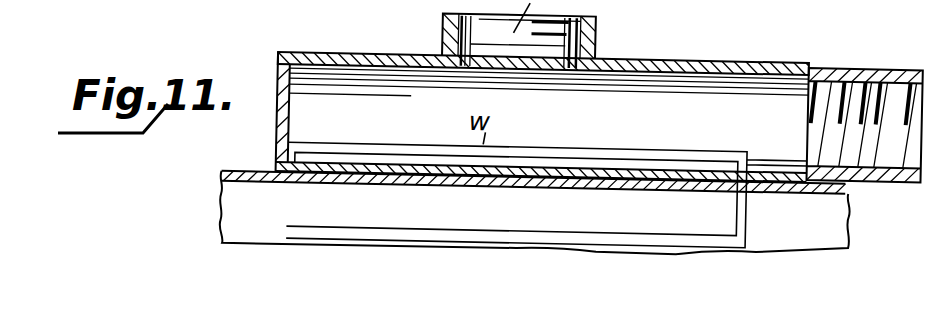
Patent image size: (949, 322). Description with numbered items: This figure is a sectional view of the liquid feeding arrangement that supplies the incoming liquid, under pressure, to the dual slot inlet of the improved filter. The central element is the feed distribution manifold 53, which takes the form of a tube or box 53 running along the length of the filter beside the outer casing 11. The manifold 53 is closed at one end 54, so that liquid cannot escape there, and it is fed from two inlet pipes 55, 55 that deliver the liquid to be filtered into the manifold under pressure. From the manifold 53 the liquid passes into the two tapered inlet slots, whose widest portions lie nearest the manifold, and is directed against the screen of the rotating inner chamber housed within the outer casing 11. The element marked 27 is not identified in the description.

The outer casing 11 is at (534, 214).
The boss 27 is at (471, 34).
The distribution manifold 53 is at (620, 106).
The closed end 54 is at (281, 126).
The inlet pipe 55 is at (843, 115).